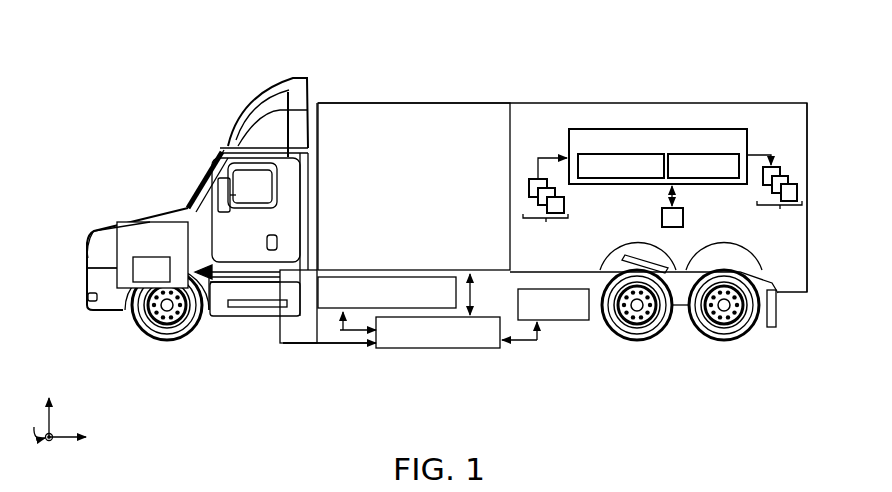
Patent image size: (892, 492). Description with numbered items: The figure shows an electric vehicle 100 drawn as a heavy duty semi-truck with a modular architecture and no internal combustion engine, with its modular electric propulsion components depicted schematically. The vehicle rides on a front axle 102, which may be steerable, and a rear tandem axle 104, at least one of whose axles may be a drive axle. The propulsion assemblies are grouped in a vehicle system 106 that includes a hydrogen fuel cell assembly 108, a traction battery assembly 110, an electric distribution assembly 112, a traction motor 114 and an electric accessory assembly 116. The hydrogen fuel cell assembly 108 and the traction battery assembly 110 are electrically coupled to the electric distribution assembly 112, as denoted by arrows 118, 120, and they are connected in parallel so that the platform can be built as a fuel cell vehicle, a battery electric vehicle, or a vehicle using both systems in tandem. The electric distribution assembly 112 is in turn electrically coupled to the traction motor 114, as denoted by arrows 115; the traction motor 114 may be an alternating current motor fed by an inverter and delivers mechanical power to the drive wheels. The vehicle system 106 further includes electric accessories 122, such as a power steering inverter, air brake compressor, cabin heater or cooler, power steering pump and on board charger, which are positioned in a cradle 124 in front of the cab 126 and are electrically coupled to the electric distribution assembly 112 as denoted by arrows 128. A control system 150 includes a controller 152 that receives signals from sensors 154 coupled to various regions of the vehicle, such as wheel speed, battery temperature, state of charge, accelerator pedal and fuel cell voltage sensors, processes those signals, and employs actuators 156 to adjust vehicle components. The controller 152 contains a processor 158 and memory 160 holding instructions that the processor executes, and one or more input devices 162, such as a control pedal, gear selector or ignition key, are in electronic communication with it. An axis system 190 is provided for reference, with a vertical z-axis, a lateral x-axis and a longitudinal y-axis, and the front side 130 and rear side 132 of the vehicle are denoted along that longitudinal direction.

The electric vehicle 100 is at (91, 91).
The front axle 102 is at (157, 368).
The rear tandem axle 104 is at (670, 361).
The vehicle system 106 is at (390, 51).
The hydrogen fuel cell assembly 108 is at (414, 186).
The traction battery assembly 110 is at (387, 292).
The electric distribution assembly 112 is at (438, 332).
The traction motor 114 is at (553, 304).
The arrows 115 is at (537, 342).
The electric accessory assembly 116 is at (137, 255).
The arrow 118 is at (340, 330).
The arrow 120 is at (471, 296).
The electric accessories 122 is at (87, 268).
The cradle 124 is at (89, 240).
The cab 126 is at (177, 189).
The arrows 128 is at (346, 345).
The front side 130 is at (66, 250).
The rear side 132 is at (816, 236).
The control system 150 is at (553, 143).
The controller 152 is at (606, 128).
The sensors 154 is at (545, 200).
The actuators 156 is at (774, 192).
The processor 158 is at (621, 166).
The memory 160 is at (703, 166).
The input device 162 is at (662, 219).
The axis system 190 is at (70, 401).